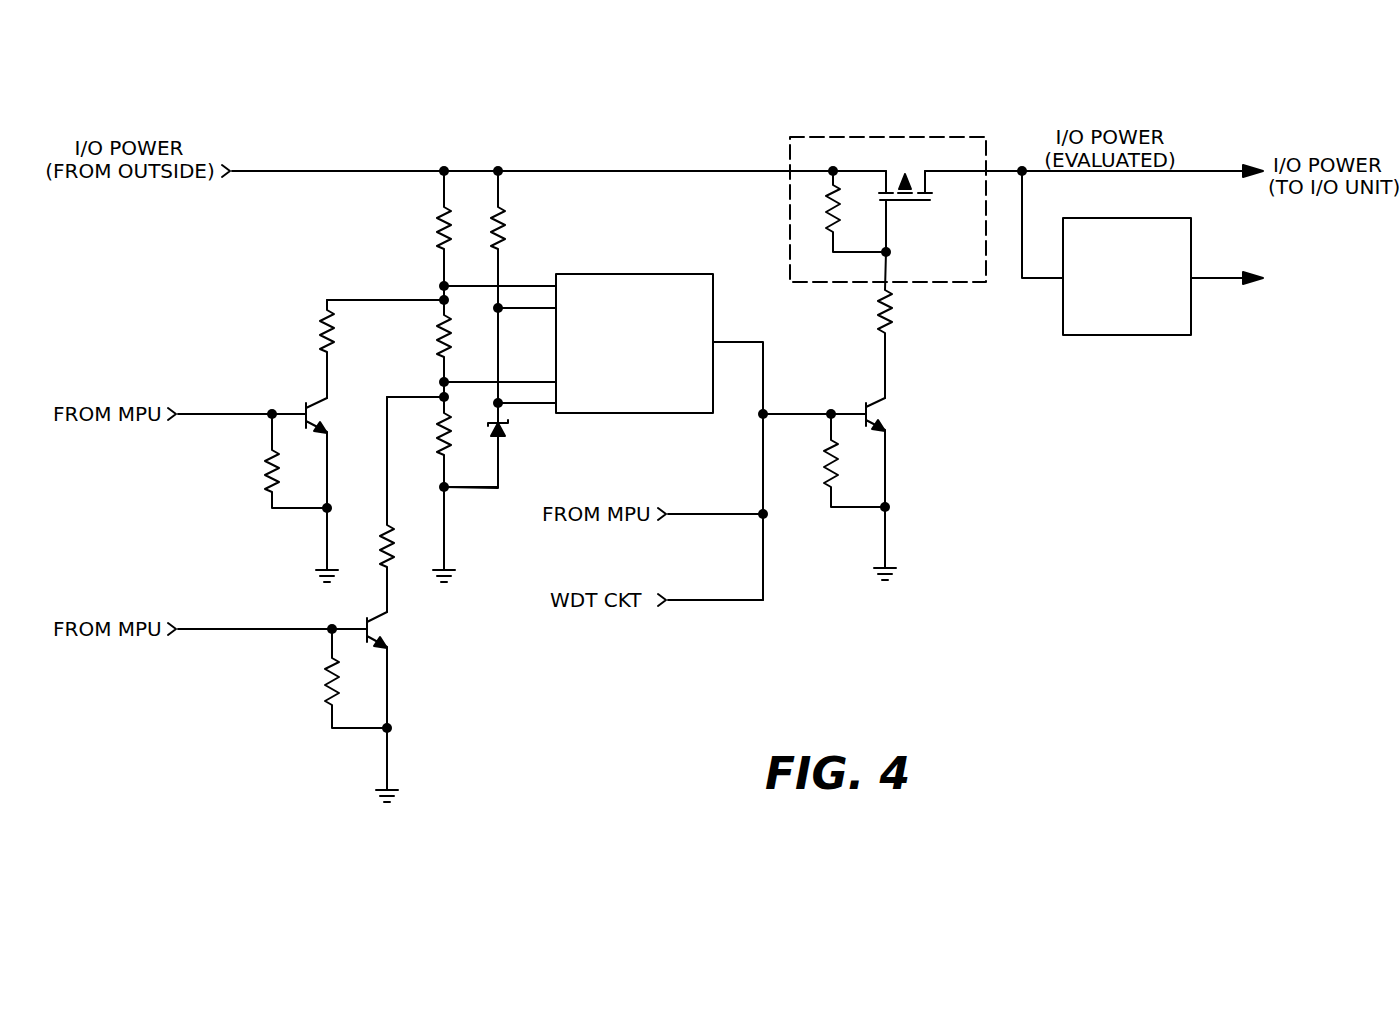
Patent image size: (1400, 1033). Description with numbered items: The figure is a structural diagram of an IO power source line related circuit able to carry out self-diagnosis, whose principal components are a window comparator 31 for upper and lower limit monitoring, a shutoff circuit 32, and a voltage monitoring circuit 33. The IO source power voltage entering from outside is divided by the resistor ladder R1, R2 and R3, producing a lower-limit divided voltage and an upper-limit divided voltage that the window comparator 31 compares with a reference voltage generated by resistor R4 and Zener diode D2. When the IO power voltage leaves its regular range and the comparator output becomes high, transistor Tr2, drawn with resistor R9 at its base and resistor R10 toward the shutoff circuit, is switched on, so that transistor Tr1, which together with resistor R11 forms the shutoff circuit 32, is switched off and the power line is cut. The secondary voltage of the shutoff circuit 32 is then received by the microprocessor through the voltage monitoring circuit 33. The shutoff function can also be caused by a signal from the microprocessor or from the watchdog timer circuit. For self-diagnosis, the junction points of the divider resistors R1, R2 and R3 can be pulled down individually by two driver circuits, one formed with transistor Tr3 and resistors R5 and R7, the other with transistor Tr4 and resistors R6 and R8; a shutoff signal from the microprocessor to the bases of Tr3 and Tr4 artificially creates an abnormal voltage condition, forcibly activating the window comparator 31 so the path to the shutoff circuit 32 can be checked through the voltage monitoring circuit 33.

The resistor R1 is at (437, 224).
The resistor R2 is at (437, 332).
The resistor R3 is at (437, 432).
The resistor R4 is at (505, 236).
The resistor R5 is at (320, 330).
The resistor R6 is at (382, 526).
The resistor R7 is at (265, 458).
The resistor R8 is at (322, 678).
The resistor R9 is at (818, 462).
The resistor R10 is at (893, 310).
The resistor R11 is at (826, 210).
The transistor Tr1 is at (928, 200).
The transistor Tr2 is at (882, 413).
The transistor Tr3 is at (330, 413).
The transistor Tr4 is at (384, 628).
The Zener diode D2 is at (503, 432).
The window comparator 31 is at (625, 273).
The shutoff circuit 32 is at (962, 137).
The voltage monitoring circuit 33 is at (1130, 336).